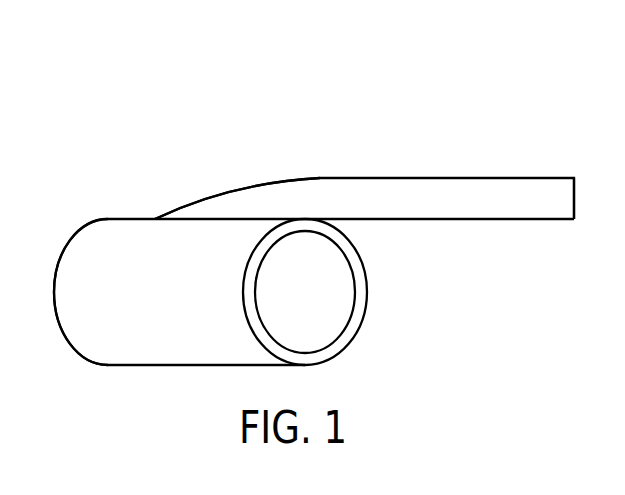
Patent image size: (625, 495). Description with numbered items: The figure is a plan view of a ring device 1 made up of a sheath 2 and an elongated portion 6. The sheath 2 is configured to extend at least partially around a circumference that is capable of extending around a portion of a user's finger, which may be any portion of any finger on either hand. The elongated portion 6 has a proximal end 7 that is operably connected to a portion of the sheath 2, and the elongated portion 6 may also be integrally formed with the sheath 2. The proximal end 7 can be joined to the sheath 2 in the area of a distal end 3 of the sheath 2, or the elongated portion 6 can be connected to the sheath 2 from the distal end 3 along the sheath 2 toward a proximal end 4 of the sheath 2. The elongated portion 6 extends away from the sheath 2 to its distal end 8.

The ring device 1 is at (34, 96).
The sheath 2 is at (66, 292).
The distal end of the sheath 3 is at (263, 225).
The proximal end of the sheath 4 is at (92, 232).
The elongated portion 6 is at (504, 185).
The proximal end of the elongated portion 7 is at (249, 193).
The distal end of the elongated portion 8 is at (563, 210).